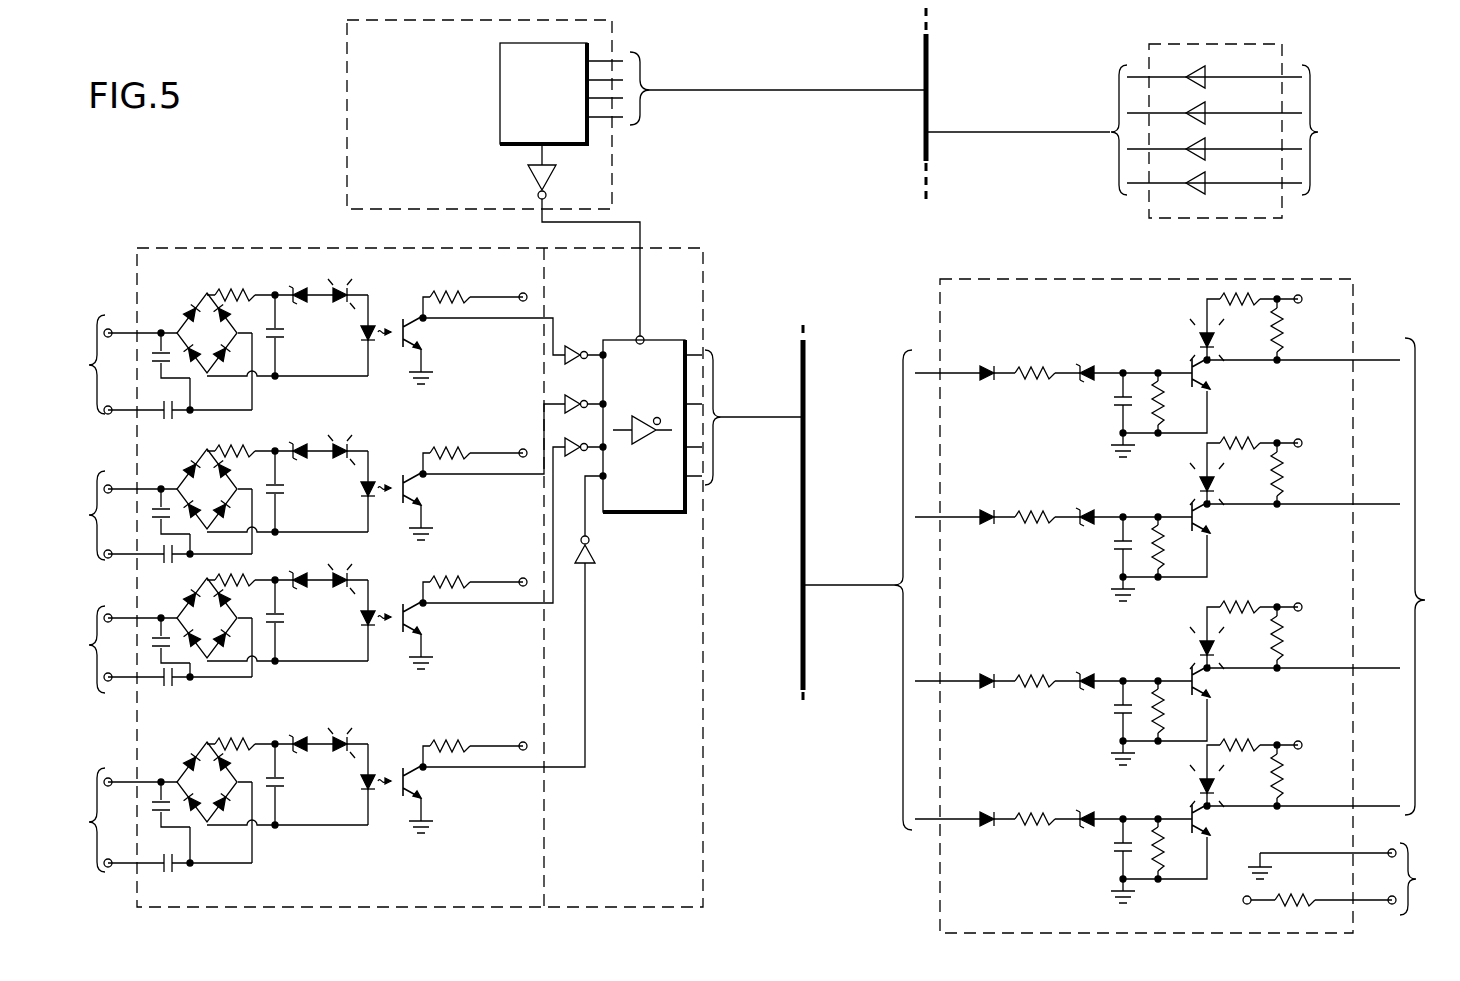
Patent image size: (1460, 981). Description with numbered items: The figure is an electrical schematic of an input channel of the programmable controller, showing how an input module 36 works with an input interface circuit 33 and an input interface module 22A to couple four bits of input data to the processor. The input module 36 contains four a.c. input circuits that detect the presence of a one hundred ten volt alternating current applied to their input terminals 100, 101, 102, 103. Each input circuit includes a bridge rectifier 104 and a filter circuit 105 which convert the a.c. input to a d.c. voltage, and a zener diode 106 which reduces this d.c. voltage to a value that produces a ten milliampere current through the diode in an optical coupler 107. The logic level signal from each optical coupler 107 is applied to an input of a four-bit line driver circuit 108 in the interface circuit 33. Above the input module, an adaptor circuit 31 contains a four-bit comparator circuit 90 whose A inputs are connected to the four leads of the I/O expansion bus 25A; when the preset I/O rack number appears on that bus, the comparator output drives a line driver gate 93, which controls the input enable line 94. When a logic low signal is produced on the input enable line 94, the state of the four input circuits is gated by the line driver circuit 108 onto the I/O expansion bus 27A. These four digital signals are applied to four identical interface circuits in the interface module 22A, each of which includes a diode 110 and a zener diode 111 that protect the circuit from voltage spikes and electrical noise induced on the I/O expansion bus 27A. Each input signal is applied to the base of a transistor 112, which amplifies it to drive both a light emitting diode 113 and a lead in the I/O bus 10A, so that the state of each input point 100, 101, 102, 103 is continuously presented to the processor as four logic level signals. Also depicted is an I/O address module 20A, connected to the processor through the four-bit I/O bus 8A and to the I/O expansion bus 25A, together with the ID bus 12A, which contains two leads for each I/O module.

The input module 36 is at (241, 246).
The input interface circuit 33 is at (745, 304).
The adaptor circuit 31 is at (614, 165).
The 4-bit comparator circuit 90 is at (713, 93).
The line driver gate 93 is at (530, 178).
The input enable line 94 is at (645, 228).
The I/O expansion bus 25A is at (930, 104).
The I/O expansion bus 27A is at (806, 486).
The I/O address module 20A is at (1245, 42).
The I/O bus 8A is at (1230, 130).
The input interface module 22A is at (1342, 277).
The I/O bus 10A is at (1429, 576).
The ID bus 12A is at (1343, 882).
The input terminal 100 is at (103, 355).
The input terminal 101 is at (106, 505).
The input terminal 102 is at (102, 665).
The input terminal 103 is at (107, 808).
The bridge rectifier 104 is at (184, 309).
The filter circuit 105 is at (245, 290).
The zener diode 106 is at (312, 300).
The optical coupler 107 is at (393, 312).
The 4-bit line driver circuit 108 is at (655, 514).
The diode 110 is at (990, 366).
The zener diode 111 is at (1088, 365).
The transistor 112 is at (1192, 363).
The light emitting diode 113 is at (1200, 330).